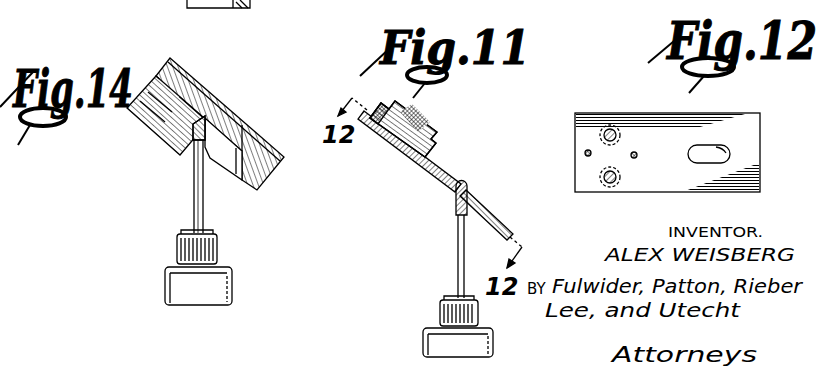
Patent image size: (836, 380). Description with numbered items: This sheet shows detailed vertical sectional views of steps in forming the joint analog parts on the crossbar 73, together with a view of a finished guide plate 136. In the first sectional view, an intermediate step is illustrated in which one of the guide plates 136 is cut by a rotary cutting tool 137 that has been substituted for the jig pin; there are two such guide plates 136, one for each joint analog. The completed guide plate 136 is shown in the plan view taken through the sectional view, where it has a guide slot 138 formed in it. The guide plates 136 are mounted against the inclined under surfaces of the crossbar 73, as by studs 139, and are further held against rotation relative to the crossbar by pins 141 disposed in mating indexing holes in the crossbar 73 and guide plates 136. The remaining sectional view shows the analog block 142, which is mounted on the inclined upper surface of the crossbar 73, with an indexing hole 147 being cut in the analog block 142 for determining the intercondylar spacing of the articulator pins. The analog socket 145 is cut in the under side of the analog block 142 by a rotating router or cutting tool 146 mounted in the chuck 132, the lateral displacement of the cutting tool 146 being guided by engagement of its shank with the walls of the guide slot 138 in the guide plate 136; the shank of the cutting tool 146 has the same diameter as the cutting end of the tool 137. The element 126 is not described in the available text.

In FIG. 14, the crossbar 73 is at (158, 134).
In FIG. 11, the crossbar 73 is at (429, 123).
In FIG. 14, the bottle 126 is at (168, 281).
In FIG. 11, the bottle 126 is at (428, 334).
In FIG. 14, the chuck 132 is at (218, 247).
In FIG. 11, the chuck 132 is at (440, 306).
In FIG. 11, the guide plate 136 is at (444, 178).
In FIG. 12, the guide plate 136 is at (657, 131).
In FIG. 11, the rotary cutting tool 137 is at (457, 233).
In FIG. 11, the guide slot 138 is at (482, 212).
In FIG. 12, the guide slot 138 is at (712, 150).
In FIG. 11, the studs 139 is at (395, 155).
In FIG. 12, the studs 139 is at (632, 103).
In FIG. 11, the pins 141 is at (377, 126).
In FIG. 12, the pins 141 is at (585, 153).
In FIG. 14, the analog block 142 is at (258, 148).
In FIG. 14, the analog socket 145 is at (225, 158).
In FIG. 14, the cutting tool 146 is at (193, 200).
In FIG. 14, the indexing hole 147 is at (206, 114).